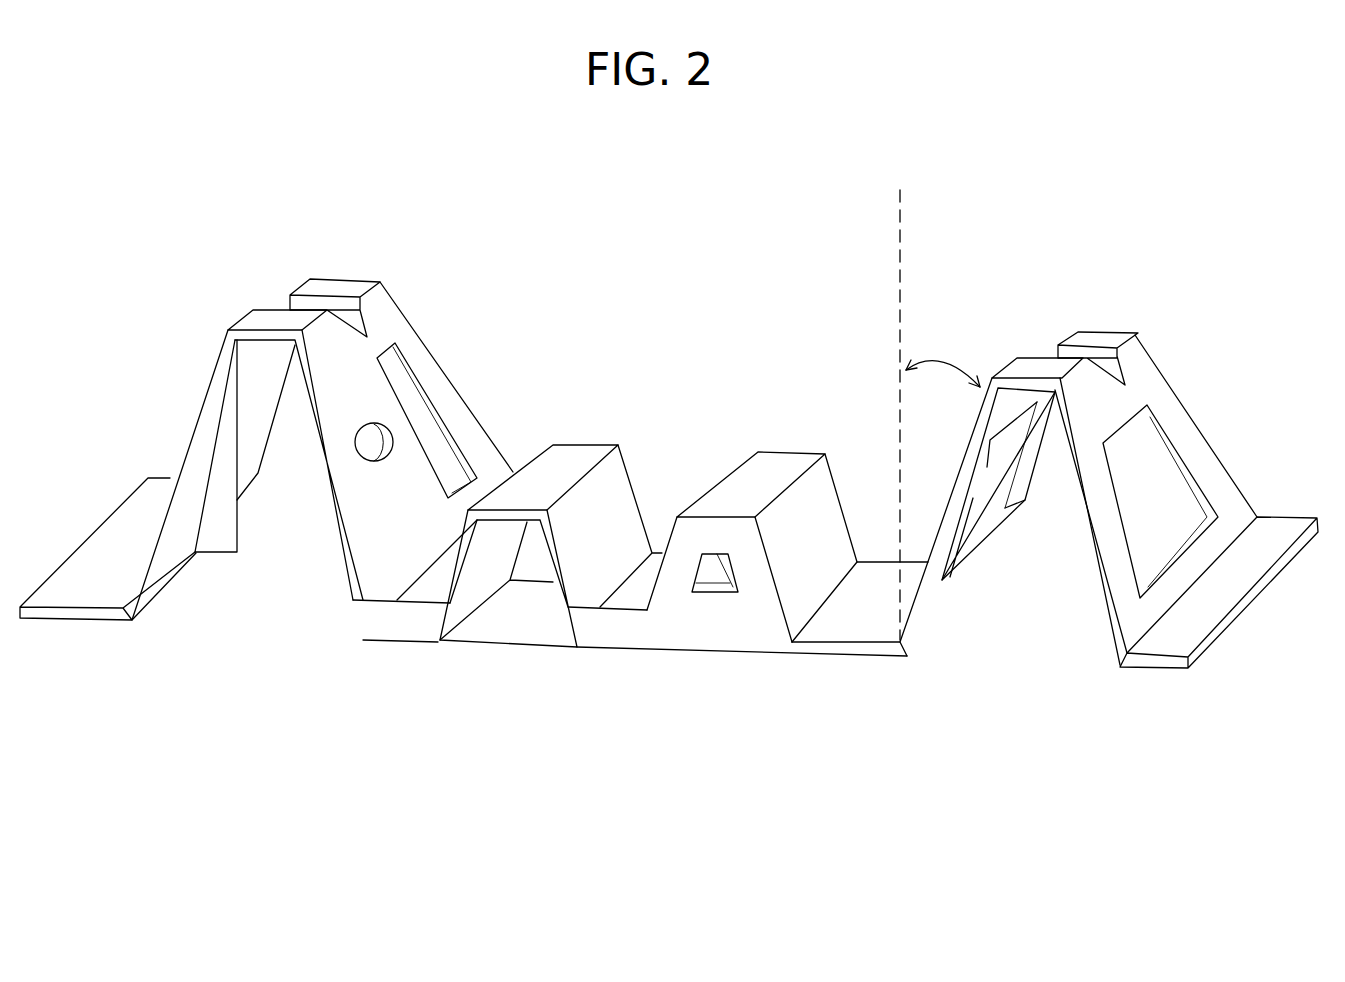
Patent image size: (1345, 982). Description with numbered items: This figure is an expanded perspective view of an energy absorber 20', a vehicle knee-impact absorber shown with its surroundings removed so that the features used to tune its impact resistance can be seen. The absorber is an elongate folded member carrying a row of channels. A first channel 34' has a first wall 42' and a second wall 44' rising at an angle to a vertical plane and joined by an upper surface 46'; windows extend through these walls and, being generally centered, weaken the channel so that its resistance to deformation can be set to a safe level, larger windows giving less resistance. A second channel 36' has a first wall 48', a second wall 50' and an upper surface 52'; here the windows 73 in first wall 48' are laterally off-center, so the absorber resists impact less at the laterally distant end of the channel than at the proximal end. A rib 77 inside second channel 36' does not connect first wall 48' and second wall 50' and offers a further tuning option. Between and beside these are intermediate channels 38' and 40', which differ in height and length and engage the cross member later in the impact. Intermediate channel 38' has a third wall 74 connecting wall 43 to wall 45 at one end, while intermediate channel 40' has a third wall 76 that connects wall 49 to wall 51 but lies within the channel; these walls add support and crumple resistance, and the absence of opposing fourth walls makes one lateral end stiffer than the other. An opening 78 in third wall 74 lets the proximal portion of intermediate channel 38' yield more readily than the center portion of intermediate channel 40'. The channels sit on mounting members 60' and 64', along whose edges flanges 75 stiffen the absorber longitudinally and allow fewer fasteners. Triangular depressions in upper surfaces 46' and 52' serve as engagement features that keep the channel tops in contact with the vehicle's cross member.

The energy absorber 20' is at (669, 437).
The first channel 34' is at (1180, 592).
The second channel 36' is at (266, 424).
The intermediate channel 38' is at (761, 505).
The intermediate channel 40' is at (537, 503).
The first wall 42' is at (1156, 494).
The wall 43 is at (821, 546).
The second wall 44' is at (1041, 477).
The wall 45 is at (712, 480).
The upper surface 46' is at (1087, 334).
The first wall 48' is at (434, 362).
The wall 49 is at (611, 534).
The second wall 50' is at (277, 425).
The wall 51 is at (517, 462).
The upper surface 52' is at (236, 294).
The mounting member 60' is at (860, 650).
The mounting member 64' is at (737, 646).
The window 73 is at (368, 427).
The third wall 74 is at (727, 638).
The flange 75 is at (427, 618).
The third wall 76 is at (543, 573).
The rib 77 is at (205, 530).
The opening 78 is at (738, 595).